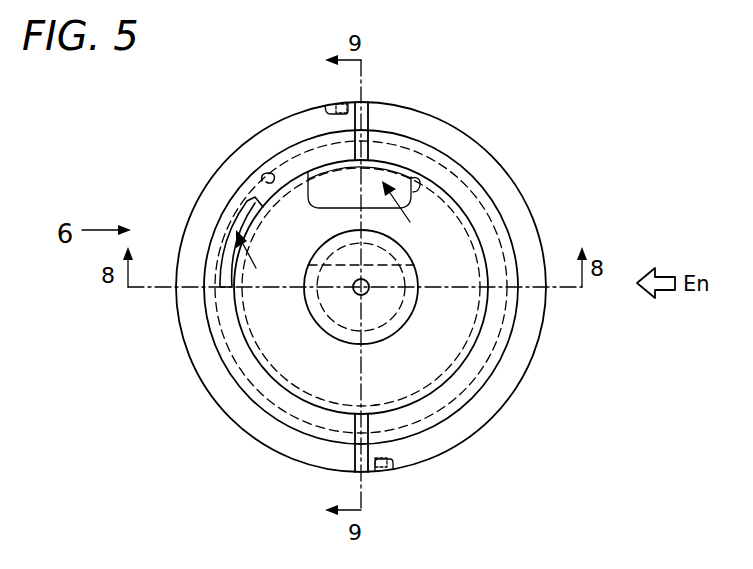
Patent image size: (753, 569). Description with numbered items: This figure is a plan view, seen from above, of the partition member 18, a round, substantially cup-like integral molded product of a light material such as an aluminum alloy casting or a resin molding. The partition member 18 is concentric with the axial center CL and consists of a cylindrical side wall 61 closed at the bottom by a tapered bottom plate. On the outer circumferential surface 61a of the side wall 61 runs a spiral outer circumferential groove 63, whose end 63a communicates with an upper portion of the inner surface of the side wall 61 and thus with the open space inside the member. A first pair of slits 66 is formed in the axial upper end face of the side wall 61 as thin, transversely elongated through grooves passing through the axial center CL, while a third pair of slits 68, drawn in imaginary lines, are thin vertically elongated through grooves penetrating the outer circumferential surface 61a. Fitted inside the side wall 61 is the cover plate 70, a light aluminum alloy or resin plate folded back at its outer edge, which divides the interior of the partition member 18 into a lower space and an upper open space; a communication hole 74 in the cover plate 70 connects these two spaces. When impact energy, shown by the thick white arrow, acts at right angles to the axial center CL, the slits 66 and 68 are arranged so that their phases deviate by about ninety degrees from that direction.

The partition member 18 is at (585, 216).
The cylindrical side wall 61 is at (205, 368).
The outer circumferential surface 61a is at (228, 417).
The spiral outer circumferential groove 63 is at (261, 178).
The end of the outer circumferential groove 63a is at (224, 252).
The first pair of slits 66 is at (373, 112).
The third pair of slits 68 is at (324, 104).
The cover plate 70 is at (448, 215).
The communication hole 74 is at (418, 170).
The axial center CL is at (361, 289).